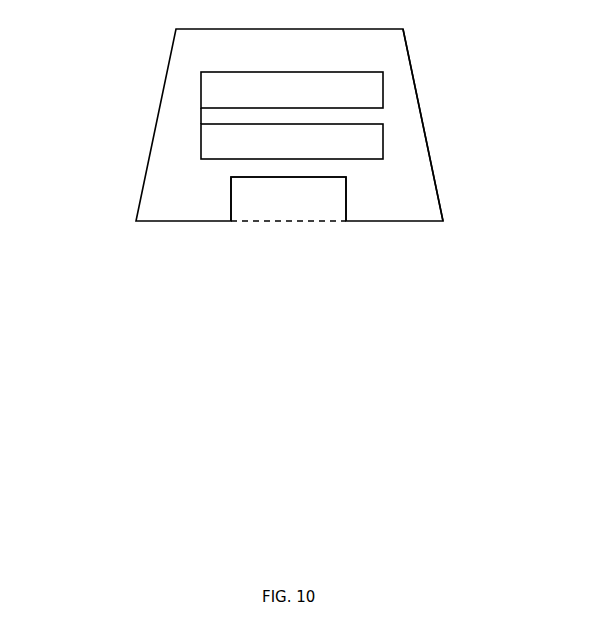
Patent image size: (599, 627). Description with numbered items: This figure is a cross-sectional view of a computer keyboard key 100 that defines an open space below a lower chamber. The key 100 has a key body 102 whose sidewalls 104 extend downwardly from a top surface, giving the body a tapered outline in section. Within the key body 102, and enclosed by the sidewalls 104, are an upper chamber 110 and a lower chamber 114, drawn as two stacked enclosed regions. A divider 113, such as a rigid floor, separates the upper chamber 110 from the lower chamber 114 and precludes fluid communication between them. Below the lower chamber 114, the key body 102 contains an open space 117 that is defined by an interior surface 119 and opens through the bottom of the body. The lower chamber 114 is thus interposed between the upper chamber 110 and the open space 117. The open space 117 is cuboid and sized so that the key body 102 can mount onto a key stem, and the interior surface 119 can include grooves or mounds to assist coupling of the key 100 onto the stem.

The key 100 is at (118, 361).
The key body 102 is at (167, 57).
The sidewalls 104 is at (438, 194).
The upper chamber 110 is at (383, 89).
The divider 113 is at (213, 114).
The lower chamber 114 is at (383, 141).
The open space 117 is at (250, 196).
The interior surface 119 is at (346, 199).